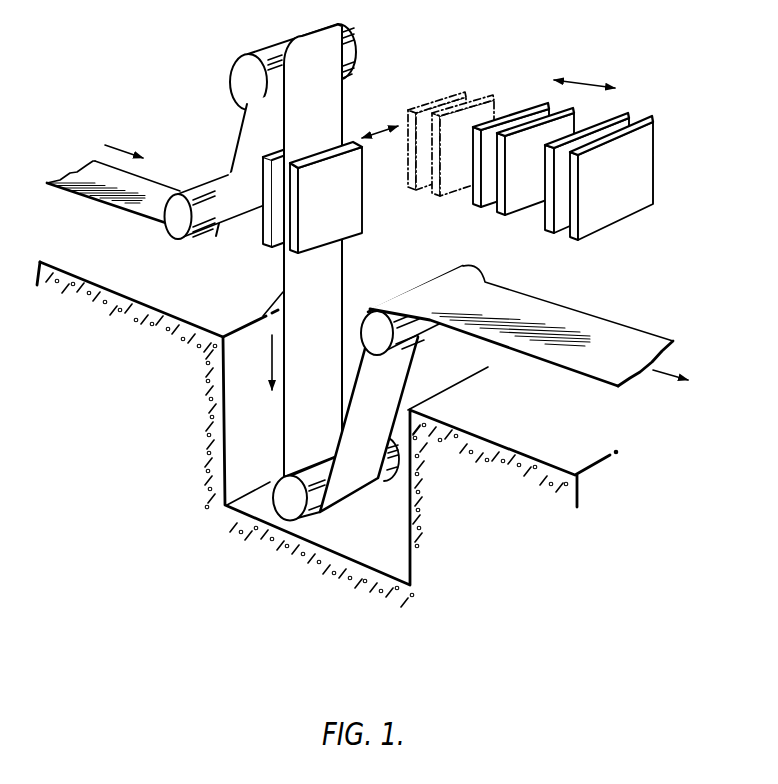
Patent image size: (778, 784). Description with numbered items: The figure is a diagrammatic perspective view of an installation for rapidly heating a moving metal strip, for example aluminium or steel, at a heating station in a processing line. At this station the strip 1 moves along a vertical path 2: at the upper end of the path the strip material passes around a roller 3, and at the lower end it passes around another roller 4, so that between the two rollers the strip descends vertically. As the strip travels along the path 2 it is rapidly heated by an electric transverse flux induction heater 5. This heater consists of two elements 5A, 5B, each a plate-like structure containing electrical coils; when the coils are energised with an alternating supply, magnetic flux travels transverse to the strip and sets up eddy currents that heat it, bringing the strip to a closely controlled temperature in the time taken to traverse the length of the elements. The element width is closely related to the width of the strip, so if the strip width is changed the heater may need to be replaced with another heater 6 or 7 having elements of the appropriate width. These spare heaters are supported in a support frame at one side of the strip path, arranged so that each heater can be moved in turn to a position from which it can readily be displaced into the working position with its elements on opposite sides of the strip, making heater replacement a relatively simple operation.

The metal strip 1 is at (623, 335).
The vertical path 2 is at (265, 315).
The roller 3 is at (357, 60).
The roller 4 is at (290, 502).
The electric transverse flux induction heater 5 is at (257, 235).
The heater element 5A is at (338, 221).
The heater element 5B is at (268, 243).
The heater 6 is at (517, 101).
The heater 7 is at (666, 147).